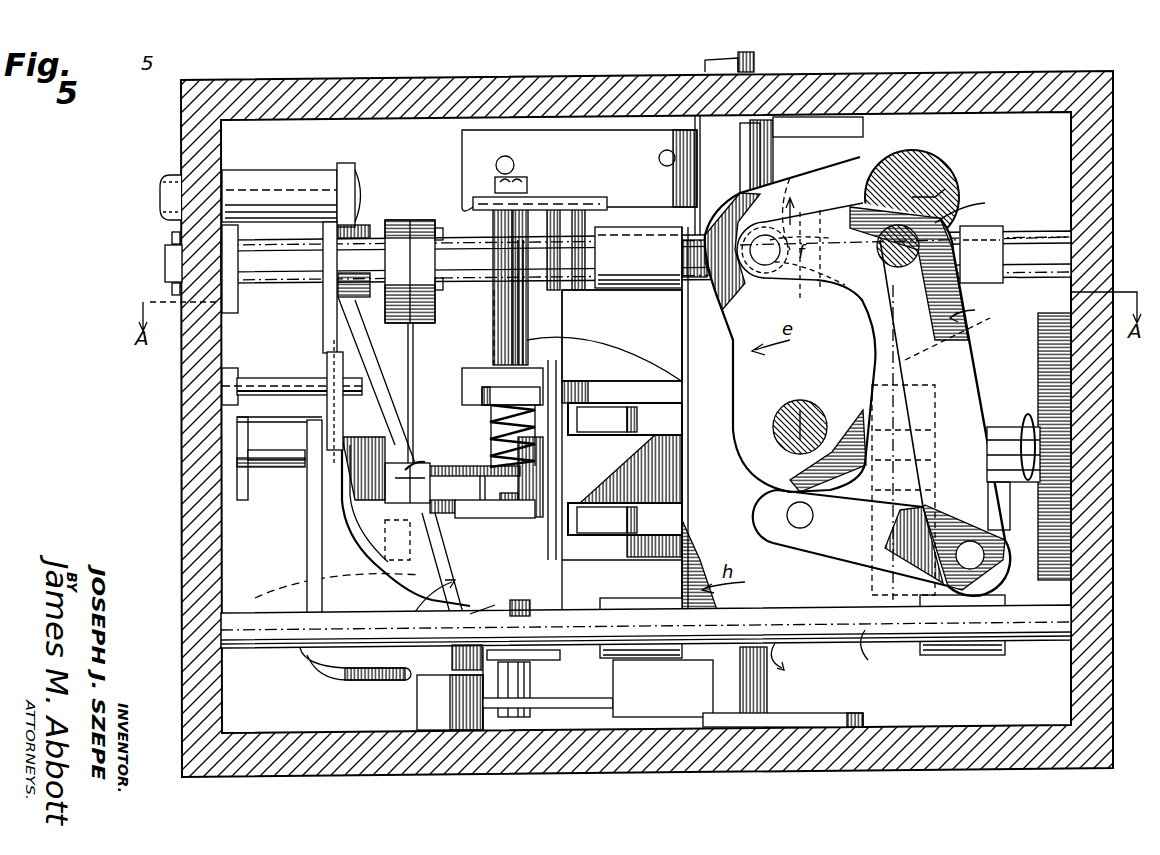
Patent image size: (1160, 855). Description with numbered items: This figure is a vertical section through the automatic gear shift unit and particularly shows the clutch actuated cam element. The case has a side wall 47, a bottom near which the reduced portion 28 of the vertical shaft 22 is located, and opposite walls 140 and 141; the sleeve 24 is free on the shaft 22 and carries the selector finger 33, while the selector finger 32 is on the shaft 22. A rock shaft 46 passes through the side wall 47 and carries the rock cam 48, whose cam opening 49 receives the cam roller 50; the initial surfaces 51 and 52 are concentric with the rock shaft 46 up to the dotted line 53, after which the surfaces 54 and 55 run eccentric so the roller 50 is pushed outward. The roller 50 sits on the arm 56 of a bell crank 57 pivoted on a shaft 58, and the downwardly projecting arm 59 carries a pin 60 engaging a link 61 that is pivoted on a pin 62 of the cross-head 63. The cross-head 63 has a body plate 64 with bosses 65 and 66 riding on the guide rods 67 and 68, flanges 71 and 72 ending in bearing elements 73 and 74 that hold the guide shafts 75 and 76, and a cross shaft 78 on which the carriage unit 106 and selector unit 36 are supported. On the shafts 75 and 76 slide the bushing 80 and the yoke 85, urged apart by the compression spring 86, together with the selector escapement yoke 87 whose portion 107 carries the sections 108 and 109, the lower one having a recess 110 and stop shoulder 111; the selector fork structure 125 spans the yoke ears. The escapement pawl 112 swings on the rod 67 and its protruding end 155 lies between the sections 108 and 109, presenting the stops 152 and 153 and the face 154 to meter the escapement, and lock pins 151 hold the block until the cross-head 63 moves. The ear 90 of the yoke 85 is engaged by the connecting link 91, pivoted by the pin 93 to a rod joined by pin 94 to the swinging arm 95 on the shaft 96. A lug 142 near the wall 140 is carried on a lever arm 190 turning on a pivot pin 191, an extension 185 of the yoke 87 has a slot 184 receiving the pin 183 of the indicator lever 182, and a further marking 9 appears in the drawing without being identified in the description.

The wall of the case 141 is at (1020, 72).
The shaft 22 is at (720, 58).
The sleeve 24 is at (765, 70).
The shaft 96 is at (162, 192).
The guide rod 67 is at (168, 262).
The swinging arm 95 is at (358, 195).
The pin 94 is at (360, 235).
The escapement pawl 112 is at (420, 358).
The guide shaft 76 is at (515, 178).
The bearing element 73 is at (560, 198).
The flange 72 is at (610, 198).
The bosses 66 is at (590, 225).
The carriage unit 106 is at (660, 488).
The selector escapement yoke 87 is at (560, 338).
The selector fork structure 125 is at (635, 355).
The selector finger 33 is at (640, 425).
The selector finger 32 is at (605, 518).
The bushing 80 is at (500, 300).
The yoke 85 is at (475, 368).
The compression spring 86 is at (487, 408).
The laterally extending section 108 is at (545, 468).
The stop 153 is at (415, 468).
The face of the pawl 154 is at (432, 428).
The stop 152 is at (392, 512).
The outwardly extending portion 107 is at (435, 590).
The laterally extending section 109 is at (410, 540).
The recess 110 is at (455, 523).
The stop shoulder 111 is at (490, 518).
The selector unit 36 is at (380, 582).
The protruding end of the pawl 155 is at (336, 589).
The lever 182 is at (222, 390).
The slot 184 is at (343, 405).
The pin 183 is at (300, 375).
The extension 185 is at (335, 433).
The pivot pin 191 is at (270, 470).
The lever arm 190 is at (310, 555).
The rock cam 48 is at (762, 375).
The arm of the bell crank 56 is at (775, 272).
The initial cam surface 51 is at (838, 288).
The cam roller 50 is at (830, 155).
The initial cam surface 52 is at (738, 193).
The cam surface 54 is at (905, 158).
The cam opening 49 is at (900, 200).
The cam surface 55 is at (912, 262).
The shaft 58 is at (972, 204).
The bosses 65 is at (980, 232).
The downwardly projecting arm 59 is at (958, 345).
The cross shaft 78 is at (959, 339).
The bell crank 57 is at (980, 311).
The slider 9 is at (965, 385).
The rock shaft 46 is at (808, 403).
The link 61 is at (865, 555).
The pin 62 is at (800, 528).
The pin 60 is at (985, 570).
The dotted line 53 is at (820, 335).
The lock pins 151 is at (1020, 415).
The pin 93 is at (430, 625).
The ear 90 is at (500, 594).
The connecting link 91 is at (450, 670).
The lug 142 is at (410, 700).
The guide shaft 75 is at (530, 688).
The bearing element 74 is at (573, 706).
The flange 71 is at (612, 695).
The reduced portion 28 is at (768, 690).
The cross-head 63 is at (795, 659).
The body plate 64 is at (877, 652).
The guide rod 68 is at (1043, 630).
The side wall 47 is at (1071, 702).
The wall of the case 140 is at (800, 770).